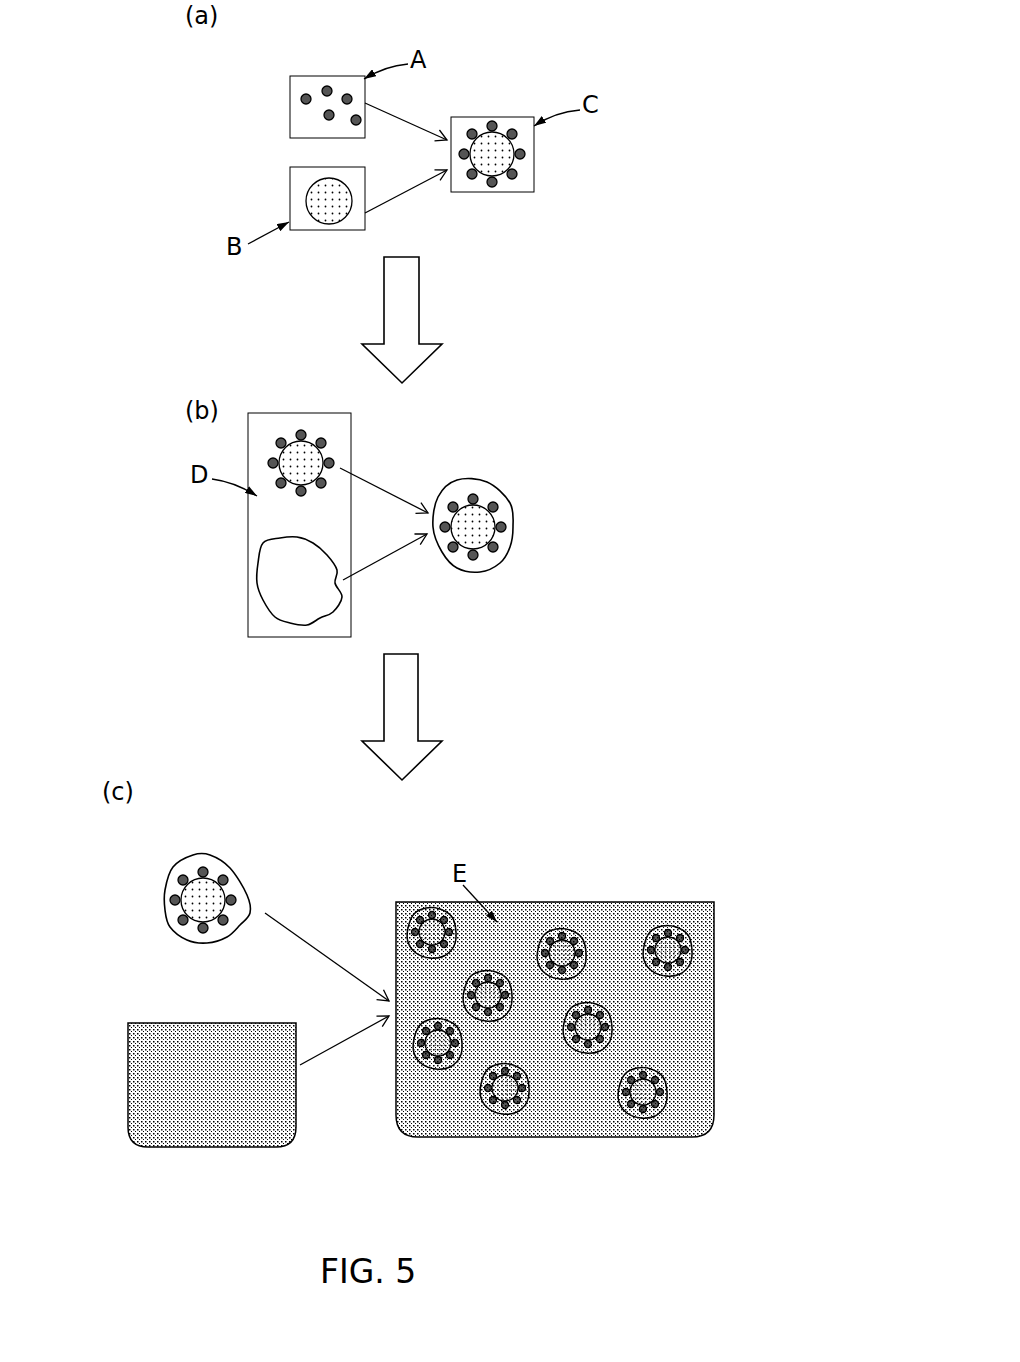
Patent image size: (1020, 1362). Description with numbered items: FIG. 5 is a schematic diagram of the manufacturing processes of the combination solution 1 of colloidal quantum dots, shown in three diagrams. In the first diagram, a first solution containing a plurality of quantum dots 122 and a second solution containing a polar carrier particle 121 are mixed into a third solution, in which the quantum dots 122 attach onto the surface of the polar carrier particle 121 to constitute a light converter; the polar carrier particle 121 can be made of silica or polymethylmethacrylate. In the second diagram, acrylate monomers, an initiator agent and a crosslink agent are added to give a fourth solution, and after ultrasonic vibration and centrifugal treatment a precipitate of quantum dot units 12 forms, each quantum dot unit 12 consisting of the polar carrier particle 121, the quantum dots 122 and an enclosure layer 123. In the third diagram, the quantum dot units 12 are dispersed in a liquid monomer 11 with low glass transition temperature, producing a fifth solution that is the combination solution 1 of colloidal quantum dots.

The combination solution of colloidal quantum dots 1 is at (603, 1019).
The liquid monomer 11 is at (141, 1042).
The quantum dot unit 12 is at (593, 473).
The polar carrier particle 121 is at (317, 202).
The quantum dots 122 is at (325, 87).
The enclosure layer 123 is at (275, 558).